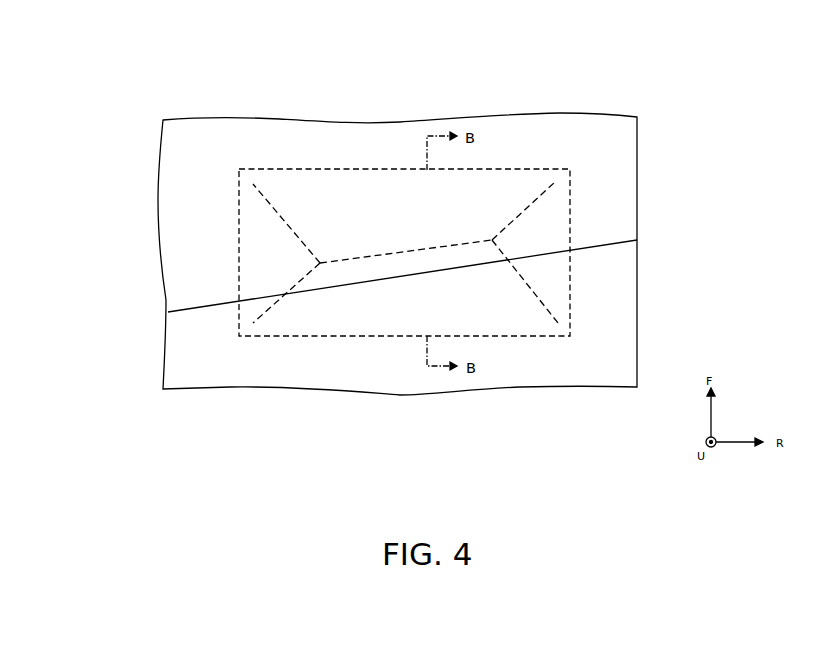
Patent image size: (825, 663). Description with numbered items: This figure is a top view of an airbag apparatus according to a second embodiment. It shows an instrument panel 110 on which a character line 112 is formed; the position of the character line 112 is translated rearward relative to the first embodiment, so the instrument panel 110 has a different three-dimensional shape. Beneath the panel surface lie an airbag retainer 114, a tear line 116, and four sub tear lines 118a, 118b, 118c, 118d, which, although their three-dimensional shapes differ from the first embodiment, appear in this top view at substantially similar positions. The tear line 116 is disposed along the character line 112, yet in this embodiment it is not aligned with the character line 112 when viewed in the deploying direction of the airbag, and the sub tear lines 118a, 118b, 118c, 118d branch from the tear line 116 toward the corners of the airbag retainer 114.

The instrument panel 110 is at (641, 149).
The character line 112 is at (640, 252).
The airbag retainer 114 is at (372, 170).
The tear line 116 is at (367, 258).
The sub tear line 118a is at (266, 204).
The sub tear line 118b is at (267, 308).
The sub tear line 118c is at (545, 192).
The sub tear line 118d is at (540, 297).